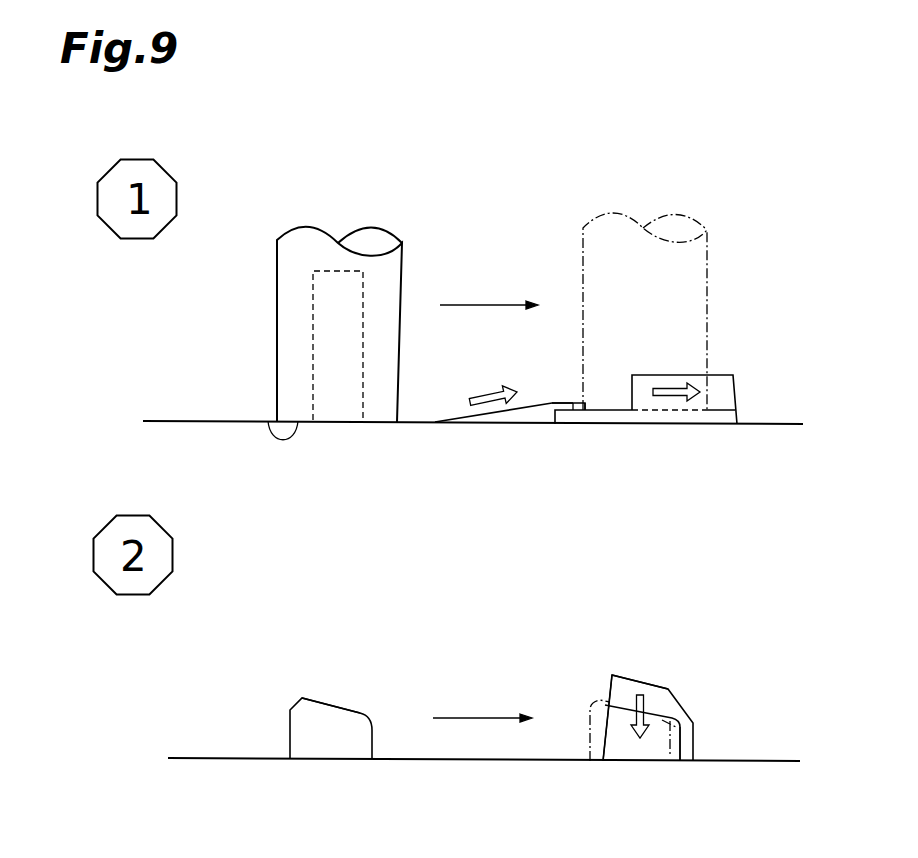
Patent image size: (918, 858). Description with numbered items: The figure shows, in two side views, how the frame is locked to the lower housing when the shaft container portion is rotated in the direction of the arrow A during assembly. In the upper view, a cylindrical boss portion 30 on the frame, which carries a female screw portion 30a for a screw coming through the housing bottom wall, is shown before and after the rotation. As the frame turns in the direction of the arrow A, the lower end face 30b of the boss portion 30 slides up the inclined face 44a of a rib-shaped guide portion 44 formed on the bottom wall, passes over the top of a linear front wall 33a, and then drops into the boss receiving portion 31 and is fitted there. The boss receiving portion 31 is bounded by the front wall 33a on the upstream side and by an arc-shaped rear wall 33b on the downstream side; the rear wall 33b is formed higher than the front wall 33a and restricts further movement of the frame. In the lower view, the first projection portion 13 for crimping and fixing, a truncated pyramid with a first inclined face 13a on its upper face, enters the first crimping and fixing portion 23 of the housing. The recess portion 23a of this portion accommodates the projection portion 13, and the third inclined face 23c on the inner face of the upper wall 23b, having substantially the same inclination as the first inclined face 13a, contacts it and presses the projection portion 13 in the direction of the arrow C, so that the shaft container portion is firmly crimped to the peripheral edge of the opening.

The boss portion 30 is at (277, 287).
The female screw portion 30a is at (363, 313).
The lower end face 30b is at (272, 422).
The boss receiving portion 31 is at (627, 371).
The front wall 33a is at (580, 410).
The rear wall 33b is at (718, 388).
The guide portion 44 is at (527, 413).
The inclined face 44a is at (527, 400).
The first projection portion for crimping and fixing 13 is at (310, 742).
The first inclined face 13a is at (333, 703).
The first crimping and fixing portion 23 is at (695, 745).
The recess portion 23a is at (643, 752).
The upper wall 23b is at (650, 690).
The third inclined face 23c is at (603, 712).
The arrow A is at (477, 305).
The arrow C is at (642, 707).